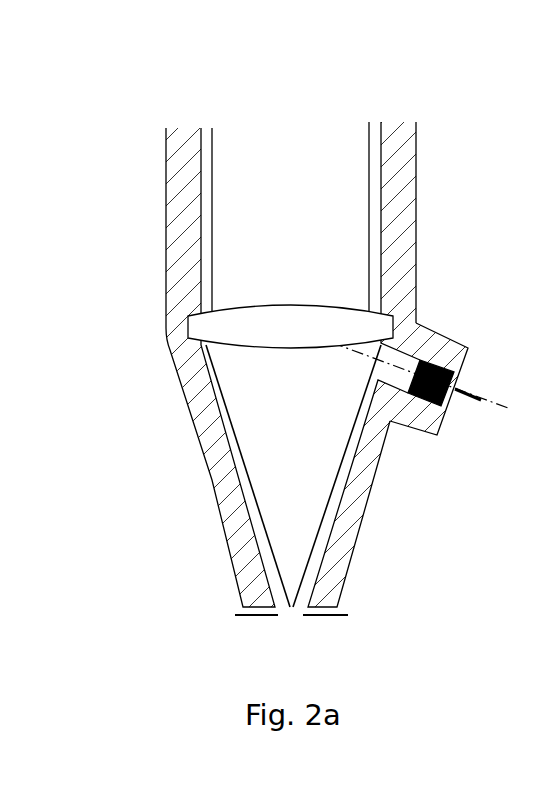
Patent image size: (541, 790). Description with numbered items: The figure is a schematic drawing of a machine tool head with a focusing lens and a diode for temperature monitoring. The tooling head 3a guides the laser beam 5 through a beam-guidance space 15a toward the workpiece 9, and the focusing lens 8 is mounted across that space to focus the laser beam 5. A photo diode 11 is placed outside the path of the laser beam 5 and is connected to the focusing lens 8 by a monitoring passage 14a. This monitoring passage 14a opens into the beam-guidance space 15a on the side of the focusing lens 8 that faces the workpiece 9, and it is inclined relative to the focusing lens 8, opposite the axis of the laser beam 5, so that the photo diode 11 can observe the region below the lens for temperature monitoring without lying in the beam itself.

The tooling head 3a is at (136, 299).
The laser beam 5 is at (245, 165).
The focusing lens 8 is at (247, 327).
The monitoring passage 14a is at (397, 363).
The photo diode 11 is at (447, 401).
The beam-guidance space 15a is at (231, 421).
The workpiece 9 is at (340, 613).